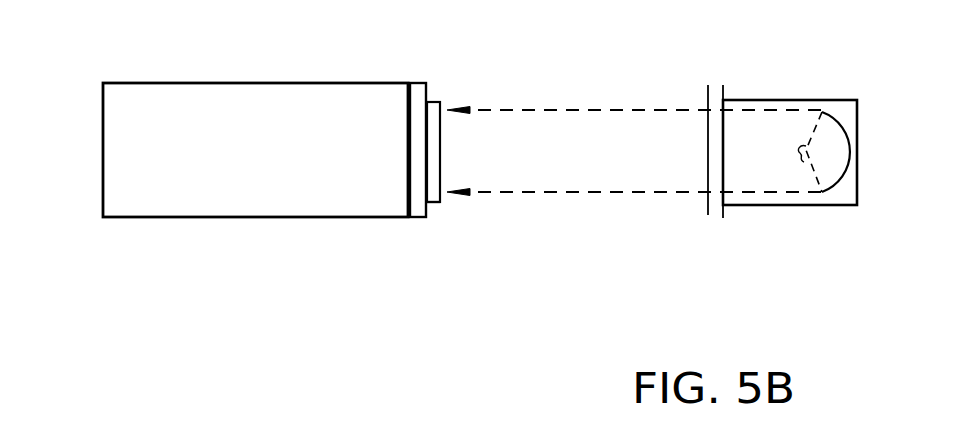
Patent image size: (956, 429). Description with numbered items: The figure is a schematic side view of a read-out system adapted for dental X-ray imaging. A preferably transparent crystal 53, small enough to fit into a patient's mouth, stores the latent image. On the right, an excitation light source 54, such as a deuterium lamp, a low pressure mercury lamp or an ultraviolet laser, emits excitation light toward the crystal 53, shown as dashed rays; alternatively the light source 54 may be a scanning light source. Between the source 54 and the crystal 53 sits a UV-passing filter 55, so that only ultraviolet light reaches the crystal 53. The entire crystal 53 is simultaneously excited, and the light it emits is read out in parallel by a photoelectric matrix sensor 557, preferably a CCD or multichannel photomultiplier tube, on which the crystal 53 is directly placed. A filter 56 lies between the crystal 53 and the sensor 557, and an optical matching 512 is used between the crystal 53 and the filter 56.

The photoelectric matrix sensor 557 is at (177, 90).
The filter 56 is at (420, 92).
The crystal 53 is at (434, 107).
The optical matching 512 is at (428, 204).
The UV-passing filter 55 is at (713, 208).
The excitation light source 54 is at (840, 110).